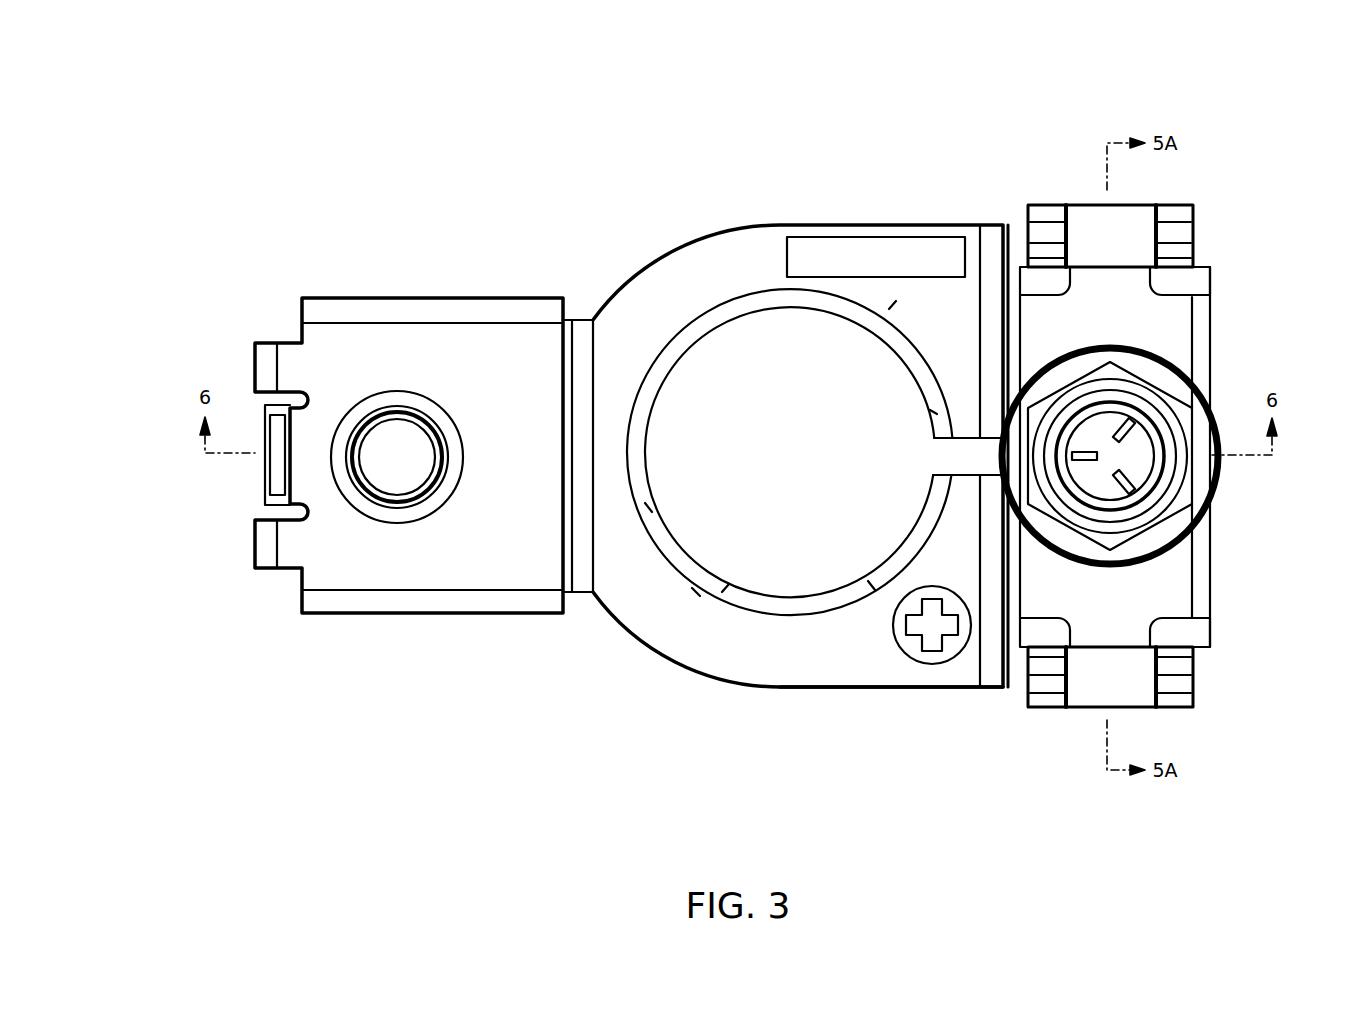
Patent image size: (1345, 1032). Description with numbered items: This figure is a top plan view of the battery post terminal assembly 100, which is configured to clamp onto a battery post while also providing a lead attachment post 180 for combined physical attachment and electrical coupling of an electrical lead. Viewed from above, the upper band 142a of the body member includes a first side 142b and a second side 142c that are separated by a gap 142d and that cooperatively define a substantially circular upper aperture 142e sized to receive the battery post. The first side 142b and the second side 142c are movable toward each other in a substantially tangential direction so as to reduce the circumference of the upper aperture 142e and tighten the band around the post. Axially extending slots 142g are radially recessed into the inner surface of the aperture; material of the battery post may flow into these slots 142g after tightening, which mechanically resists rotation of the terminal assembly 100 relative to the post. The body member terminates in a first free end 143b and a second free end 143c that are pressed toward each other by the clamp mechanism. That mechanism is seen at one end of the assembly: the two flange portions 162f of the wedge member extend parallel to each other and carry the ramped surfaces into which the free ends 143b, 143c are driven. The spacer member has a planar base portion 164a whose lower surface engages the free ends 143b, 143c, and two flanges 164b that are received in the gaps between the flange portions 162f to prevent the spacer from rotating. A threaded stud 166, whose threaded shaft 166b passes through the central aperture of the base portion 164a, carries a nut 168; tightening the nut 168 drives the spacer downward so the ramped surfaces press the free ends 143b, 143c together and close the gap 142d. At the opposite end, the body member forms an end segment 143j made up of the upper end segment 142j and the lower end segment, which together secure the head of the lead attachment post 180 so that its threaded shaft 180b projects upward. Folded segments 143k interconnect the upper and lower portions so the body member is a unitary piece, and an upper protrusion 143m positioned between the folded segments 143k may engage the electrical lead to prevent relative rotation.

The battery post terminal assembly 100 is at (322, 158).
The upper band 142a is at (798, 450).
The first side 142b is at (848, 210).
The second side 142c is at (848, 675).
The gap 142d is at (873, 453).
The upper aperture 142e is at (748, 357).
The axially extending slots 142g is at (697, 592).
The upper end segment 142j is at (362, 456).
The end segment 143j is at (360, 571).
The folded segments 143k is at (256, 358).
The upper protrusion 143m is at (272, 467).
The first free end 143b is at (1197, 307).
The second free end 143c is at (1198, 600).
The flange portions 162f is at (1043, 215).
The base portion 164a is at (1143, 325).
The flanges 164b is at (1128, 233).
The threaded stud 166 is at (1170, 456).
The threaded shaft 166b is at (1118, 453).
The nut 168 is at (1123, 537).
The lead attachment post 180 is at (380, 383).
The threaded shaft 180b is at (402, 423).